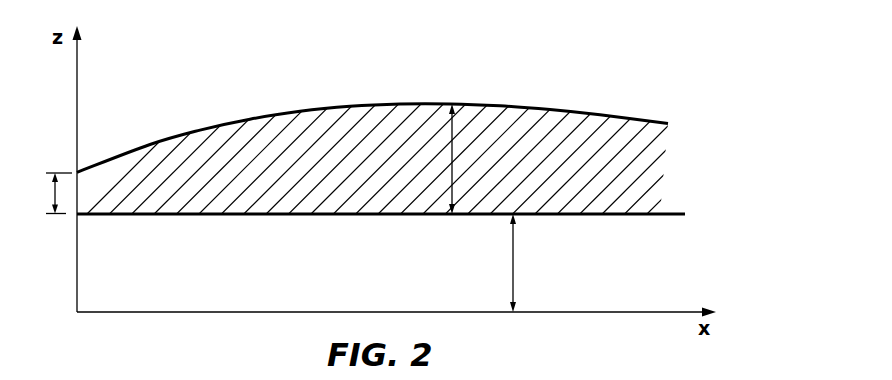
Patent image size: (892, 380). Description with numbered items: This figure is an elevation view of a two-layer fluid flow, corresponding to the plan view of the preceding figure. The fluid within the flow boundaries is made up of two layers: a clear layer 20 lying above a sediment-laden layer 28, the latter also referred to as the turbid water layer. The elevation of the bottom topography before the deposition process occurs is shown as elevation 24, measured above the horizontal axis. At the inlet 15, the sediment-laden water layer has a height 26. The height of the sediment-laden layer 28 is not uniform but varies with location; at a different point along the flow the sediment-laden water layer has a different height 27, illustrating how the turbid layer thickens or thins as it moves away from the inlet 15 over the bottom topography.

The clear layer 20 is at (448, 121).
The sediment-laden layer 28 is at (276, 124).
The inlet 15 is at (77, 216).
The height of sediment-laden water layer at a different point 27 is at (449, 130).
The height of sediment-laden water layer at inlet 26 is at (47, 194).
The elevation of bottom topography 24 is at (513, 258).